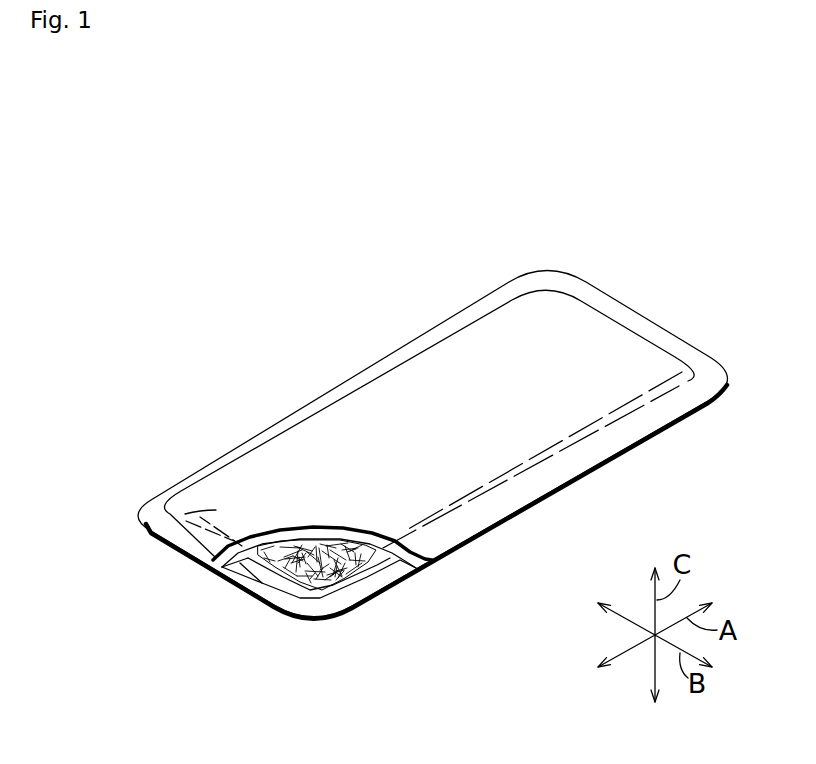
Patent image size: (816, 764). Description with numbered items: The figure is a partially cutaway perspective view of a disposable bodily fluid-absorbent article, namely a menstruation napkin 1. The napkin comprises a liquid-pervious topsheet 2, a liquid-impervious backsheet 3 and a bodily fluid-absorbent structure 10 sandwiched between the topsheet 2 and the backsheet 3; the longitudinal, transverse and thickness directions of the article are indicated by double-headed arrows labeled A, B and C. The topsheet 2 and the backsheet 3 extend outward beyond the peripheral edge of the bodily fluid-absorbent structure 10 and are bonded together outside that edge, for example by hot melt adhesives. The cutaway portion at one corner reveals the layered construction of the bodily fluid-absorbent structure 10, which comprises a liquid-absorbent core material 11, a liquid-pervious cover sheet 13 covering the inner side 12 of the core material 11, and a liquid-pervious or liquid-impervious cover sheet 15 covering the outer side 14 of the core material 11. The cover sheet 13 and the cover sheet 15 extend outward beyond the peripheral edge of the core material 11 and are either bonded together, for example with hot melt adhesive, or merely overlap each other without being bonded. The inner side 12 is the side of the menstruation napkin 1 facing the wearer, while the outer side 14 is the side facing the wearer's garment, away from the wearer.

The menstruation napkin 1 is at (604, 217).
The liquid-pervious topsheet 2 is at (174, 547).
The liquid-impervious backsheet 3 is at (218, 578).
The bodily fluid-absorbent structure 10 is at (401, 570).
The liquid-absorbent core material 11 is at (355, 583).
The inner side 12 is at (330, 538).
The liquid-pervious cover sheet 13 is at (290, 528).
The outer side 14 is at (299, 584).
The cover sheet 15 is at (255, 571).